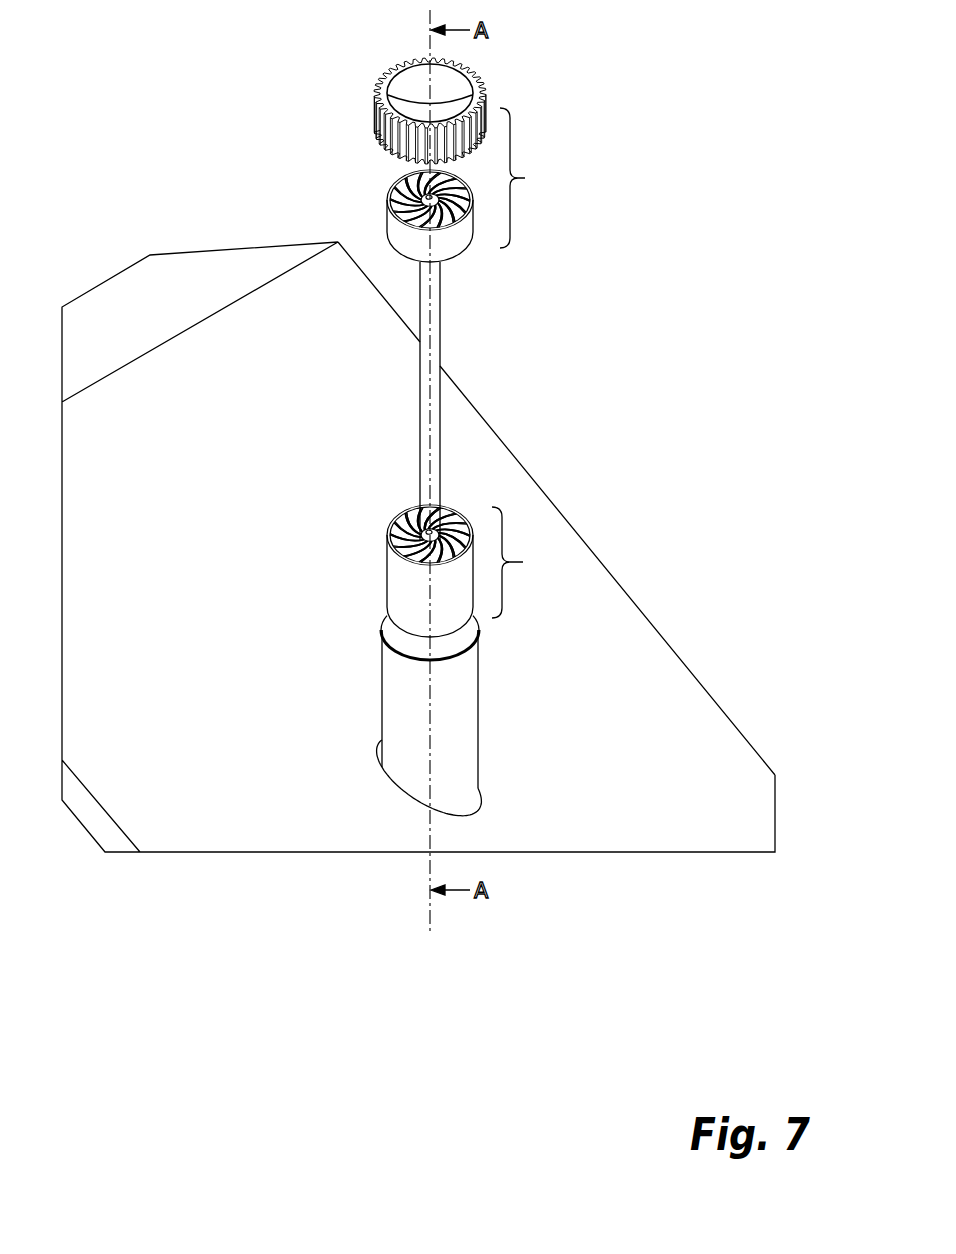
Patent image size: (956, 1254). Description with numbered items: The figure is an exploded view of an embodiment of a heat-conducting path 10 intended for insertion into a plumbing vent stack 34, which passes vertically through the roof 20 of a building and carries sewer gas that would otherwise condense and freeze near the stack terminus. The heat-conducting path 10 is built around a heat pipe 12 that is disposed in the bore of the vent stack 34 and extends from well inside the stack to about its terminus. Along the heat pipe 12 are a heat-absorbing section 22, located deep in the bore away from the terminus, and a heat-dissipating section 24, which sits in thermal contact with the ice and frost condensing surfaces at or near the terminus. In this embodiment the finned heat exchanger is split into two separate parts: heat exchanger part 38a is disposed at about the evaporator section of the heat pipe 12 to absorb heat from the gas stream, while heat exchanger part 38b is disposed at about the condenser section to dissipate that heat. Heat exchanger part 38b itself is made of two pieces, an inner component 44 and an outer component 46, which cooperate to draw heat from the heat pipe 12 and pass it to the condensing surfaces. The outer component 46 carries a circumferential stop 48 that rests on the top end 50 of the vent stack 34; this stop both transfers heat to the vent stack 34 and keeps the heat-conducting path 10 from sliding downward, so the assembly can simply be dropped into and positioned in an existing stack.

The heat-conducting path 10 is at (545, 386).
The heat pipe 12 is at (440, 350).
The roof 20 is at (237, 655).
The heat-absorbing section 22 is at (470, 571).
The heat-dissipating section 24 is at (527, 178).
The vent stack 34 is at (478, 727).
The heat exchanger part 38a is at (385, 578).
The heat exchanger part 38b is at (388, 215).
The inner component 44 is at (450, 248).
The outer component 46 is at (466, 135).
The circumferential stop 48 is at (482, 85).
The top end 50 is at (478, 628).